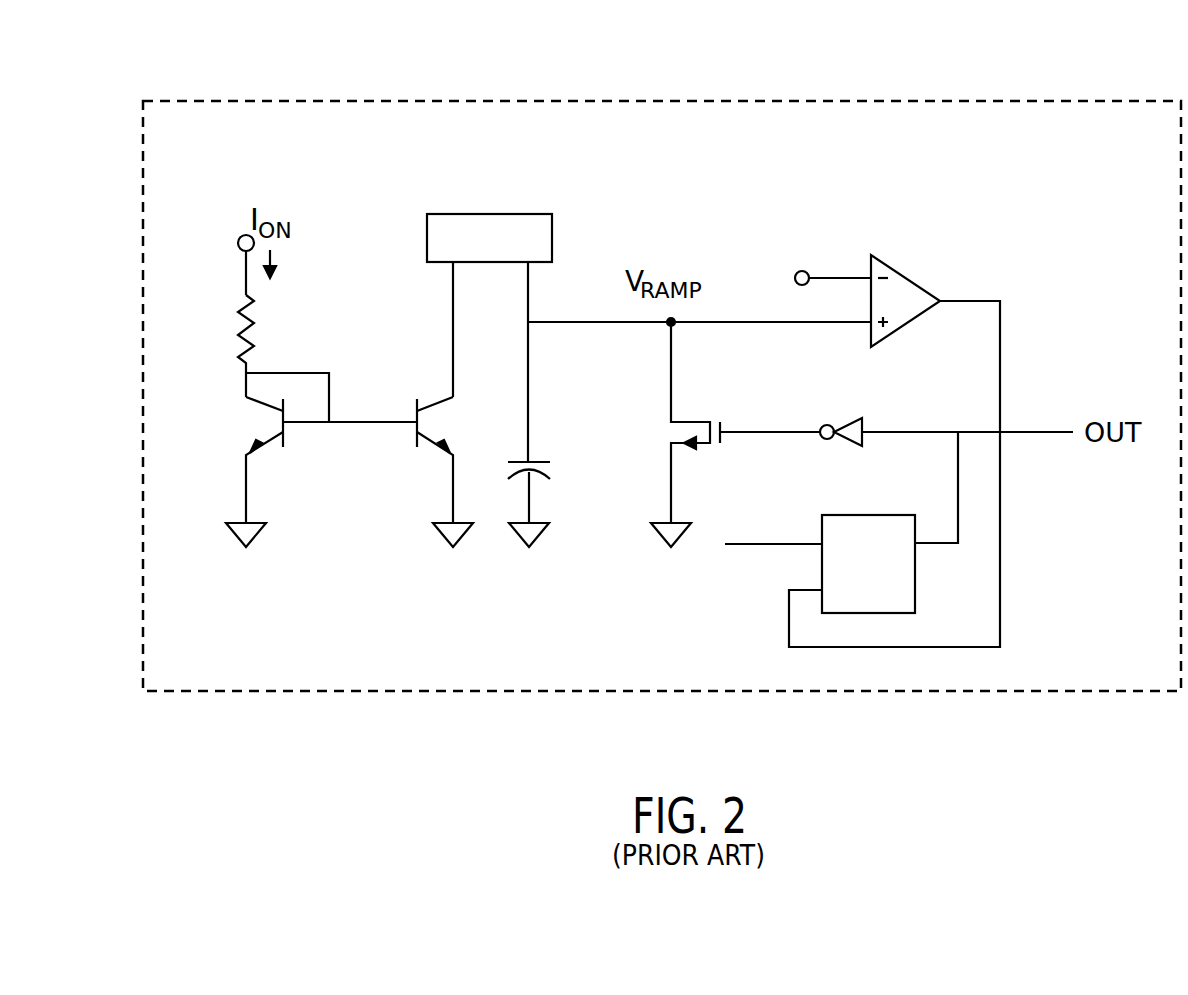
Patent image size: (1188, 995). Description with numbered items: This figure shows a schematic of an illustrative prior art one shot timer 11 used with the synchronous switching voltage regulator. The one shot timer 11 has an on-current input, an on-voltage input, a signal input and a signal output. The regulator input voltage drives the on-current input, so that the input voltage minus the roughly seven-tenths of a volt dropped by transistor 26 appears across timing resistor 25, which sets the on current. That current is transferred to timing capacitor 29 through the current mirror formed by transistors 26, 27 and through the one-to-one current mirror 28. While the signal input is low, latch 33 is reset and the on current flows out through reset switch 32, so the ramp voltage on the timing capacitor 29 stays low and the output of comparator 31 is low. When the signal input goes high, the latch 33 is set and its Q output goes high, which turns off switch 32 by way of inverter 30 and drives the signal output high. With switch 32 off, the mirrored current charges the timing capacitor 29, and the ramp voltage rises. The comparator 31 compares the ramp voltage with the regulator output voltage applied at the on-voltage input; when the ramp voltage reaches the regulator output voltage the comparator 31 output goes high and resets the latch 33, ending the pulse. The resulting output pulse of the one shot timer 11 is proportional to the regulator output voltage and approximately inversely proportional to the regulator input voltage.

The one shot timer 11 is at (182, 101).
The timing resistor 25 is at (250, 327).
The transistor 26 is at (283, 437).
The transistor 27 is at (415, 405).
The current mirror 28 is at (445, 214).
The timing capacitor 29 is at (535, 462).
The inverter 30 is at (862, 425).
The comparator 31 is at (916, 282).
The reset switch 32 is at (722, 430).
The latch 33 is at (898, 515).